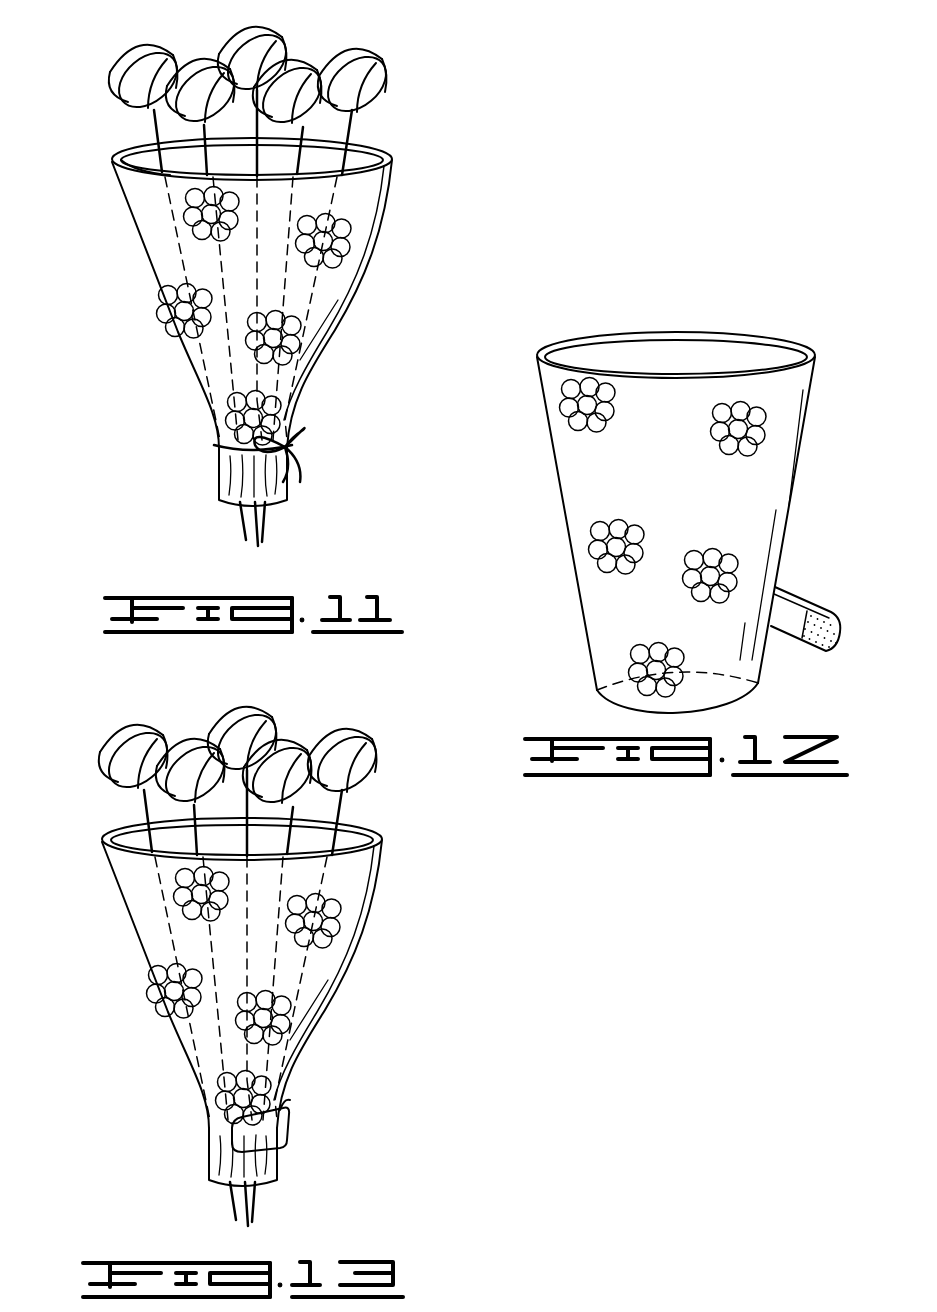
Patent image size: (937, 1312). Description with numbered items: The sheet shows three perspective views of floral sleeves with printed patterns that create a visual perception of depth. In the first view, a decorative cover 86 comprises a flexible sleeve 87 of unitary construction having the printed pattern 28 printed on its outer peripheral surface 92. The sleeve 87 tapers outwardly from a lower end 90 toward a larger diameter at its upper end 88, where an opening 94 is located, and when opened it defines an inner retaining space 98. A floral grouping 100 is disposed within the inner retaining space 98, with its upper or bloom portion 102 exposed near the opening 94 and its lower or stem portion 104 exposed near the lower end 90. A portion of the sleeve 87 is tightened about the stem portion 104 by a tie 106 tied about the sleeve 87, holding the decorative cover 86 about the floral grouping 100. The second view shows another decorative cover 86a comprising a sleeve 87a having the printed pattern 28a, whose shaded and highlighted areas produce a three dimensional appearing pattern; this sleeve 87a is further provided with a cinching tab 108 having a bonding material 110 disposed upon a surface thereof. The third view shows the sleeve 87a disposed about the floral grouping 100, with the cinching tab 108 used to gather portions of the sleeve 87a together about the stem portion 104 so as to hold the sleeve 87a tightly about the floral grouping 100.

In FIG. 11, the printed pattern 28 is at (333, 272).
In FIG. 12, the printed pattern 28a is at (745, 458).
In FIG. 13, the printed pattern 28a is at (290, 996).
In FIG. 11, the decorative cover 86 is at (257, 309).
In FIG. 12, the decorative cover 86a is at (684, 522).
In FIG. 13, the decorative cover 86a is at (248, 1002).
In FIG. 11, the sleeve 87 is at (383, 225).
In FIG. 12, the sleeve 87a is at (810, 406).
In FIG. 13, the sleeve 87a is at (371, 984).
In FIG. 11, the upper end 88 is at (390, 158).
In FIG. 11, the lower end 90 is at (277, 508).
In FIG. 11, the outer peripheral surface 92 is at (155, 238).
In FIG. 11, the opening 94 is at (363, 147).
In FIG. 11, the inner retaining space 98 is at (143, 153).
In FIG. 11, the floral grouping 100 is at (300, 282).
In FIG. 13, the floral grouping 100 is at (289, 967).
In FIG. 11, the bloom portion 102 is at (377, 48).
In FIG. 11, the stem portion 104 is at (236, 528).
In FIG. 13, the stem portion 104 is at (199, 1206).
In FIG. 11, the tie 106 is at (302, 442).
In FIG. 12, the cinching tab 108 is at (843, 618).
In FIG. 13, the cinching tab 108 is at (301, 1138).
In FIG. 12, the bonding material 110 is at (820, 643).